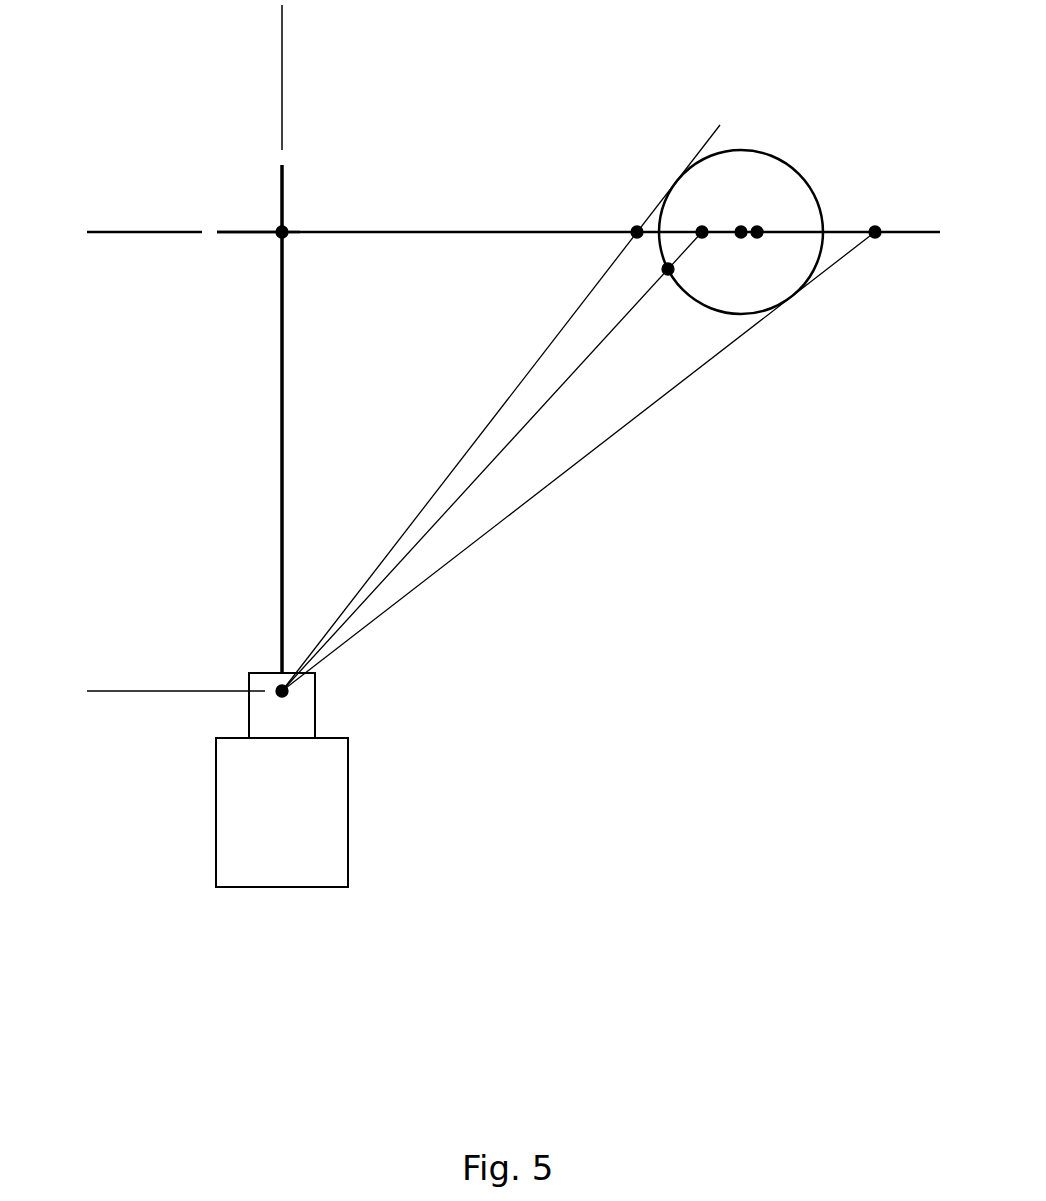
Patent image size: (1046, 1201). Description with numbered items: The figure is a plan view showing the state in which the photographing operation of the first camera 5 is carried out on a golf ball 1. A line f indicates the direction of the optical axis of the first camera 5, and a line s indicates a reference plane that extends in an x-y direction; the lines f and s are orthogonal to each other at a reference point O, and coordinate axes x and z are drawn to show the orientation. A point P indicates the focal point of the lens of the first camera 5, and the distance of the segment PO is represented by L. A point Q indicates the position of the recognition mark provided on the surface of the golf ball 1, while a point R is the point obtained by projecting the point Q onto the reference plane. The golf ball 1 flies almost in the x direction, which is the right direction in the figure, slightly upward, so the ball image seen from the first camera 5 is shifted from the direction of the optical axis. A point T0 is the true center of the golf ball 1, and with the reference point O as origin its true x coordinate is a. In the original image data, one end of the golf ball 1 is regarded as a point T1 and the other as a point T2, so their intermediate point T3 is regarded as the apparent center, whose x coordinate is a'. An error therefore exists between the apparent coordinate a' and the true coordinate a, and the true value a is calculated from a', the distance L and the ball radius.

The golf ball 1 is at (780, 150).
The first camera 5 is at (300, 828).
The focal point of lens P is at (290, 694).
The reference point O is at (278, 240).
The reference plane line s is at (257, 232).
The optical axis line f is at (282, 461).
The distance of segment PO L is at (118, 232).
The true x coordinate of ball center a is at (511, 142).
The apparent x coordinate of ball center a' is at (519, 118).
The first end point of golf ball T1 is at (634, 228).
The projected point R is at (700, 226).
The center of golf ball T0 is at (741, 236).
The apparent center of golf ball T3 is at (765, 228).
The second end point of golf ball T2 is at (880, 238).
The recognition mark position Q is at (670, 275).
The x direction x is at (216, 1017).
The z direction z is at (216, 1017).